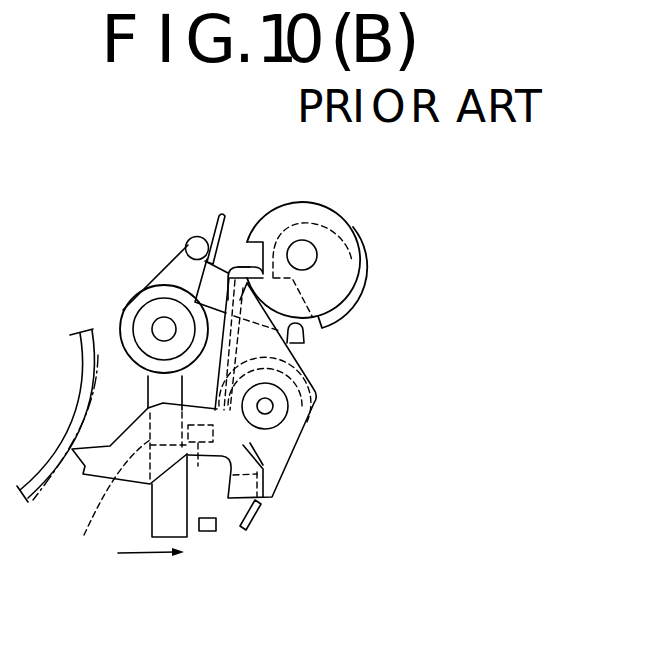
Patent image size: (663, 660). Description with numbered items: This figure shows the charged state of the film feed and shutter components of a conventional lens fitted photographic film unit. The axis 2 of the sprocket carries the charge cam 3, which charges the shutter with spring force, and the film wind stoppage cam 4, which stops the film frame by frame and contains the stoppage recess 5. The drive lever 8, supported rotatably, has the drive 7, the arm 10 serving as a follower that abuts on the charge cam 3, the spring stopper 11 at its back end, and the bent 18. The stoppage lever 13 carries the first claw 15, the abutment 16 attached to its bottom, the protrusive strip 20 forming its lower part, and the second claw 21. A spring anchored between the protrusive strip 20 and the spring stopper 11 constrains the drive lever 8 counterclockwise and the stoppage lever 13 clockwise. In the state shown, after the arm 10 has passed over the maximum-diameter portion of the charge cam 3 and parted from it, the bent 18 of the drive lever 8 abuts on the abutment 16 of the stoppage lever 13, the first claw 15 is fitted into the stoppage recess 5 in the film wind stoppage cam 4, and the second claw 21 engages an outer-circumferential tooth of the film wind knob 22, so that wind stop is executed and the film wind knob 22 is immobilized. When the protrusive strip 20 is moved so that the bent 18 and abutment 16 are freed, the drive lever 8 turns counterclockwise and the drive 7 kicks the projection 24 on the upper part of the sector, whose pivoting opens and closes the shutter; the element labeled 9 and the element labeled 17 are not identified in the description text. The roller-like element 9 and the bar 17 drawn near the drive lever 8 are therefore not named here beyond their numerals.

The axis 2 is at (306, 252).
The charge cam 3 is at (365, 304).
The film wind stoppage cam 4 is at (357, 230).
The stoppage recess 5 is at (257, 236).
The drive 7 is at (158, 513).
The drive lever 8 is at (140, 269).
The roller 9 is at (150, 328).
The arm 10 is at (306, 338).
The spring stopper 11 is at (188, 243).
The stoppage lever 13 is at (302, 475).
The first claw 15 is at (247, 265).
The abutment 16 is at (206, 463).
The spring 17 is at (217, 230).
The bent 18 is at (99, 501).
The protrusive strip 20 is at (233, 500).
The second claw 21 is at (73, 462).
The film wind knob 22 is at (72, 416).
The projection 24 is at (208, 533).